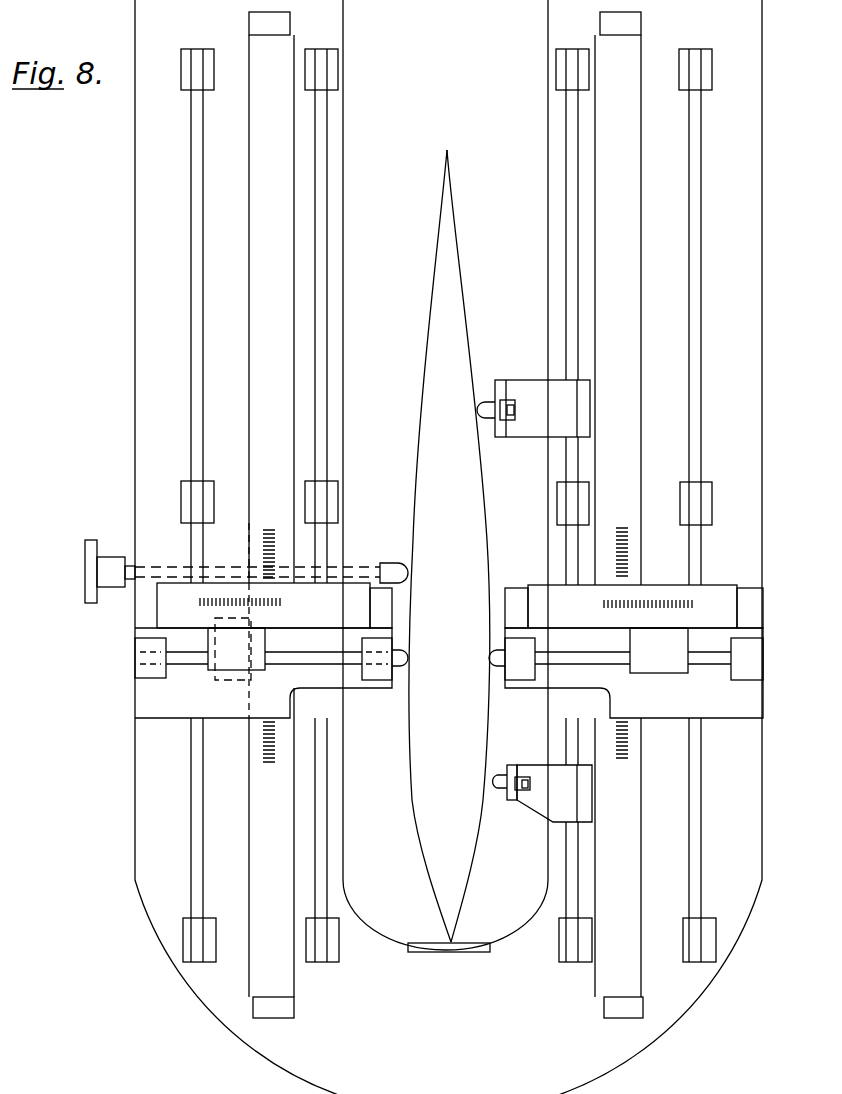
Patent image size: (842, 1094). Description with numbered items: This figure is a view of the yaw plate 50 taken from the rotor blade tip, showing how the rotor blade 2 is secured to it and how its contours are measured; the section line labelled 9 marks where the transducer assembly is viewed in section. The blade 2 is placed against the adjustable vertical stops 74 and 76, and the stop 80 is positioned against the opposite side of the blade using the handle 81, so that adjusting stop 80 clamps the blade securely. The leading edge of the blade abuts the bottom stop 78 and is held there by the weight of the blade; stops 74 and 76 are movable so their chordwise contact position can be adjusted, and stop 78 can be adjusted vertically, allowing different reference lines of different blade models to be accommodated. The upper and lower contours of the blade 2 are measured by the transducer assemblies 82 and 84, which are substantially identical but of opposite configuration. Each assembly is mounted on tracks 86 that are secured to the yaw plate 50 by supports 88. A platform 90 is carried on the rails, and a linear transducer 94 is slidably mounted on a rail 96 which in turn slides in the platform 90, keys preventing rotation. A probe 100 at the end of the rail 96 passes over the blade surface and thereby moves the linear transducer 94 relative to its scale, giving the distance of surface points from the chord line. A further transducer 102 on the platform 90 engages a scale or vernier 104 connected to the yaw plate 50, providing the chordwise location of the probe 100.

The rotor blade 2 is at (425, 720).
The section line 9- 9 is at (130, 524).
The yaw plate 50 is at (152, 184).
The adjustable vertical stop 74 is at (481, 405).
The adjustable vertical stop 76 is at (498, 775).
The bottom stop 78 is at (476, 943).
The stop 80 is at (391, 571).
The handle 81 is at (85, 581).
The transducer assembly 82 is at (173, 567).
The transducer assembly 84 is at (723, 573).
The tracks 86 is at (190, 279).
The supports 88 is at (338, 66).
The platform 90 is at (146, 701).
The linear transducer 94 is at (238, 654).
The rail 96 is at (331, 655).
The probe 100 is at (402, 656).
The transducer 102 is at (222, 682).
The scale or vernier 104 is at (266, 234).